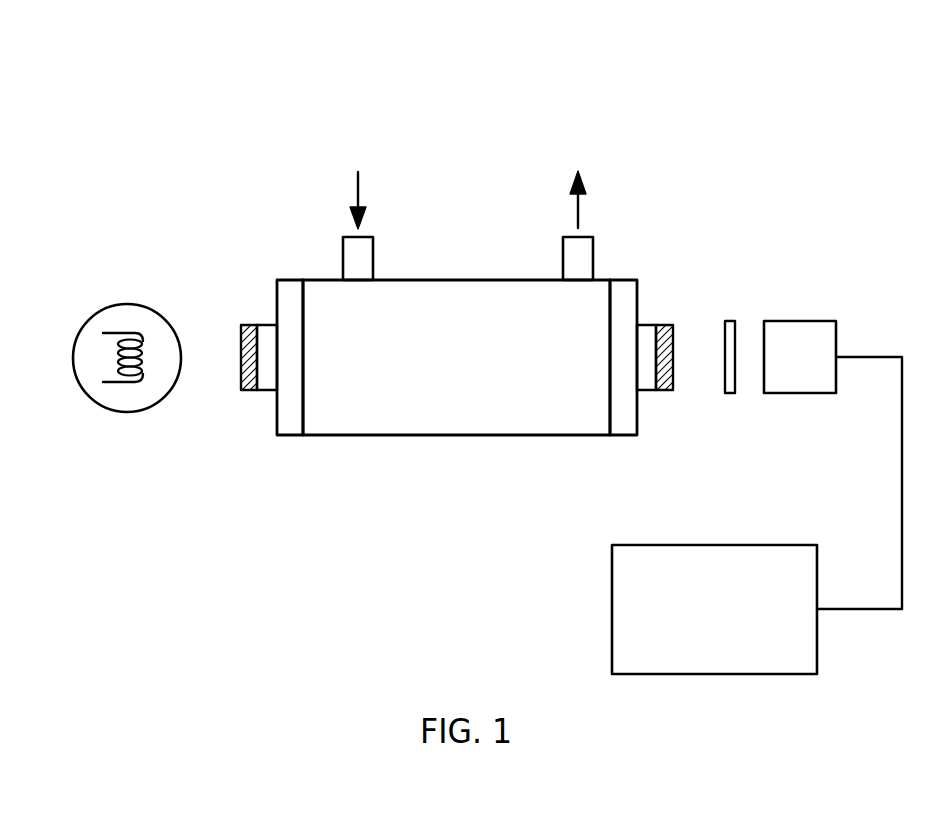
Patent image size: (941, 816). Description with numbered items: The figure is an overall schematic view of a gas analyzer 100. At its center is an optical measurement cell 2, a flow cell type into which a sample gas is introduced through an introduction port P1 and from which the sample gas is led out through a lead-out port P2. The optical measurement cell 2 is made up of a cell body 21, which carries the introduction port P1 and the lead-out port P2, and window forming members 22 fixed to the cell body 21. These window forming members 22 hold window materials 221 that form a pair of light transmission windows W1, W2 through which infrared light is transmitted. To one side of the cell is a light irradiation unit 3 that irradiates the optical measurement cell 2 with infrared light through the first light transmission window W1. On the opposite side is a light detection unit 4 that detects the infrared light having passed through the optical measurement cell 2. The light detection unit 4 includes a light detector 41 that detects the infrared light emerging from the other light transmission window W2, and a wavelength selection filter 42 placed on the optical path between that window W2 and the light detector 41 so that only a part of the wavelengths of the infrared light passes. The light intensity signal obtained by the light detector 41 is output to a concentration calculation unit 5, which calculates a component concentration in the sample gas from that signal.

The gas analyzer 100 is at (208, 138).
The optical measurement cell 2 is at (390, 436).
The cell body 21 is at (495, 436).
The window forming members 22 is at (287, 436).
The window materials 221 is at (247, 390).
The light transmission window W1 is at (241, 357).
The light transmission window W2 is at (674, 357).
The introduction port P1 is at (342, 258).
The lead-out port P2 is at (562, 258).
The light irradiation unit 3 is at (127, 303).
The light detection unit 4 is at (812, 260).
The light detector 41 is at (803, 321).
The wavelength selection filter 42 is at (729, 321).
The concentration calculation unit 5 is at (715, 675).